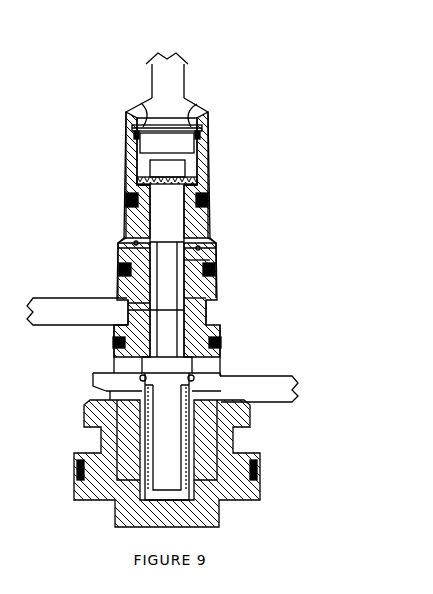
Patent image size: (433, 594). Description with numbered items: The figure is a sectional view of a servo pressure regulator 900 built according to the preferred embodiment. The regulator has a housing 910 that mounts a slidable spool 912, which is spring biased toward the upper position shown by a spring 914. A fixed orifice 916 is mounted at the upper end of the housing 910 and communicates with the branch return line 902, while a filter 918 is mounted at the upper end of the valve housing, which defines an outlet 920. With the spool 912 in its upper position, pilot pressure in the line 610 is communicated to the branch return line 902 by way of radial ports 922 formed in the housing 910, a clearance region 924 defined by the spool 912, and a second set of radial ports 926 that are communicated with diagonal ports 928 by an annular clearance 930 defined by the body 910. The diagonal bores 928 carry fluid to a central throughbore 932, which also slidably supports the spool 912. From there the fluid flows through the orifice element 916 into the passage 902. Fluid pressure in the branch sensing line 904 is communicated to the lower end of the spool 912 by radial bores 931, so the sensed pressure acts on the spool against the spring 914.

The servo pressure regulator 900 is at (292, 155).
The branch return line 902 is at (158, 80).
The branch sensing line 904 is at (286, 398).
The pilot pressure line 610 is at (60, 323).
The housing 910 is at (224, 282).
The spool 912 is at (205, 260).
The spring 914 is at (187, 492).
The fixed orifice 916 is at (170, 148).
The filter 918 is at (197, 104).
The outlet 920 is at (141, 103).
The radial ports 922 is at (127, 300).
The clearance region 924 is at (208, 300).
The second set of radial ports 926 is at (134, 242).
The diagonal ports 928 is at (124, 230).
The annular clearance 930 is at (130, 253).
The radial bores 931 is at (110, 372).
The central throughbore 932 is at (158, 206).